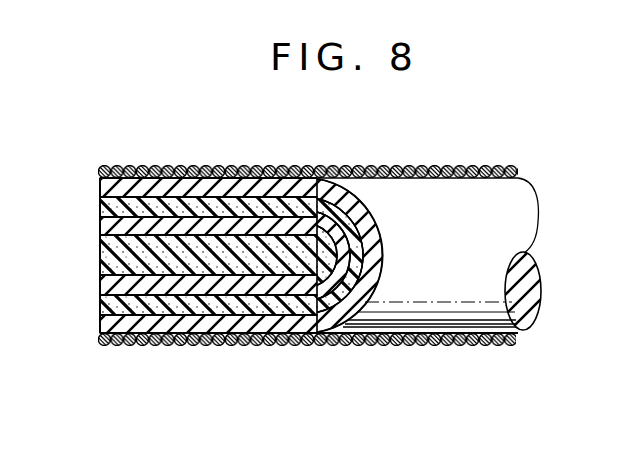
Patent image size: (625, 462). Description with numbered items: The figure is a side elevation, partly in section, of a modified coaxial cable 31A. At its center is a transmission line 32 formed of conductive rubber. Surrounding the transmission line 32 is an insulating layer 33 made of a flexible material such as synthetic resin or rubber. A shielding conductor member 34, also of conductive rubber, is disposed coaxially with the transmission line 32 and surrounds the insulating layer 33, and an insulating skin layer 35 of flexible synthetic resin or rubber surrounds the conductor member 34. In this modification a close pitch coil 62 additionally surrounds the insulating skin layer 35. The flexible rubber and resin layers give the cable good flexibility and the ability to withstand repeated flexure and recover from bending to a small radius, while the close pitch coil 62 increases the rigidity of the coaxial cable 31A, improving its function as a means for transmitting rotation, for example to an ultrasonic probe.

The coaxial cable 31A is at (336, 152).
The transmission line 32 is at (100, 258).
The insulating layer 33 is at (100, 225).
The shielding conductor member 34 is at (100, 205).
The insulating skin layer 35 is at (100, 188).
The close pitch coil 62 is at (228, 165).